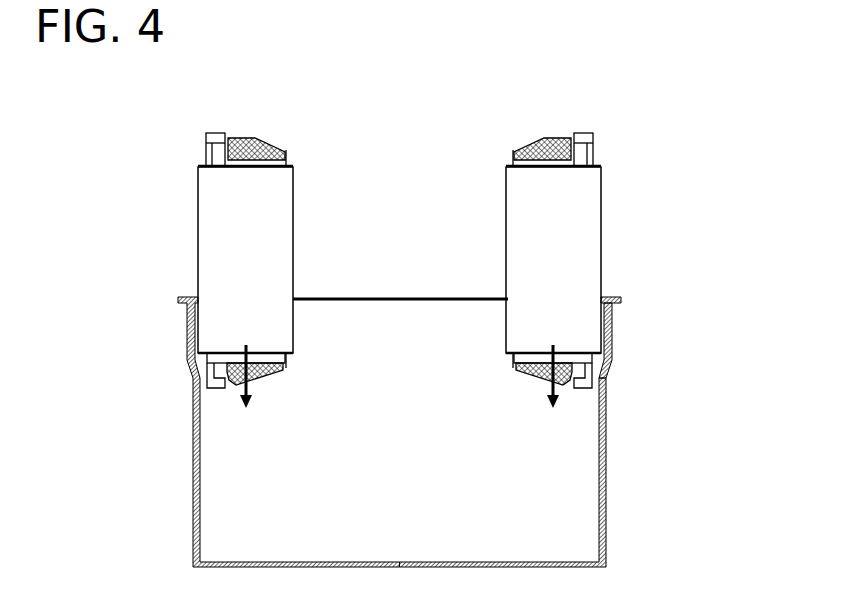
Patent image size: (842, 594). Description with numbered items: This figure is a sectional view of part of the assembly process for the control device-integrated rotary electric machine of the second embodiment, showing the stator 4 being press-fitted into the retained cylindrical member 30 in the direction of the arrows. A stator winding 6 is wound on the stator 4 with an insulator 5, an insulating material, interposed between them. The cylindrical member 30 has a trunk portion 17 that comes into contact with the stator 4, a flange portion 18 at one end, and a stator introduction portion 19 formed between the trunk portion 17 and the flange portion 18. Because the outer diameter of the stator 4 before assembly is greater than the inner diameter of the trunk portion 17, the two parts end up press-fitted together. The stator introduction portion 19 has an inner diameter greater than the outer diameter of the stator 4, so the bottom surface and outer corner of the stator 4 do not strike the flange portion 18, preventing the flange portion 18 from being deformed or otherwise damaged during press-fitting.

The stator 4 is at (583, 213).
The insulator 5 is at (225, 166).
The stator winding 6 is at (250, 143).
The trunk portion 17 is at (603, 480).
The flange portion 18 is at (620, 298).
The stator introduction portion 19 is at (612, 333).
The cylindrical member 30 is at (412, 401).